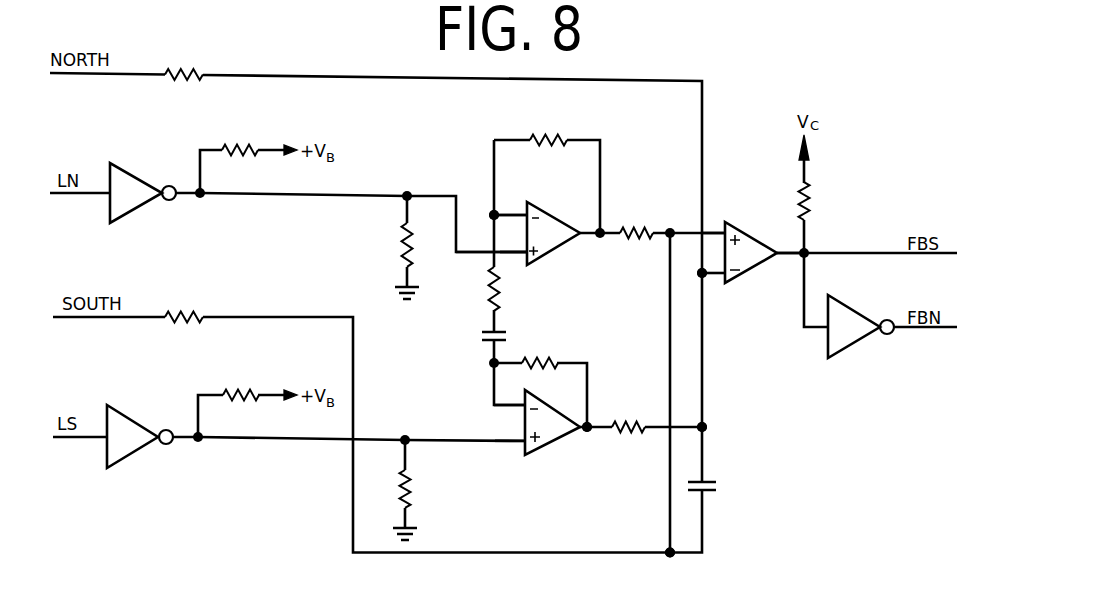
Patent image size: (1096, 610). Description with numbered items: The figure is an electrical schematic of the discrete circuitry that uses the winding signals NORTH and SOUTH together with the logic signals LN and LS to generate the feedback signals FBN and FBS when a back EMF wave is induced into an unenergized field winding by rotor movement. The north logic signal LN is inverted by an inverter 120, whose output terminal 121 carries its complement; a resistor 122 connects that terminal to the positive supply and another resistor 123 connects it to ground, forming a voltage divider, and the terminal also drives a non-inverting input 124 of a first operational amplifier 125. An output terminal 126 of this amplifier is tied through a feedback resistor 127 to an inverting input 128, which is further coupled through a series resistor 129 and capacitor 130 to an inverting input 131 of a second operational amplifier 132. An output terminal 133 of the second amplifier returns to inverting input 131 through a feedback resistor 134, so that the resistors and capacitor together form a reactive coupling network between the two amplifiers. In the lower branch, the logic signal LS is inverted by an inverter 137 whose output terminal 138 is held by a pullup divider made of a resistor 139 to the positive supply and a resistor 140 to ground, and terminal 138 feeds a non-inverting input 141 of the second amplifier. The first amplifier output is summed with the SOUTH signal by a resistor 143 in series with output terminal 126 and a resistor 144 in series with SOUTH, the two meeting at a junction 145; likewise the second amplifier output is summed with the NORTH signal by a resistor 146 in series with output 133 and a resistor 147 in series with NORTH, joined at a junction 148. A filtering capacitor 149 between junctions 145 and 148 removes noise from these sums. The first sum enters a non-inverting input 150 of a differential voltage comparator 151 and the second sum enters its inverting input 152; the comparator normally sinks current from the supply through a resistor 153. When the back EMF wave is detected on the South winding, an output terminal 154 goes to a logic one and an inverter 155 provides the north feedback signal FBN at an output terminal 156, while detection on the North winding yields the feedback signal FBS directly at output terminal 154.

The inverter 120 is at (125, 178).
The output terminal 121 is at (188, 203).
The resistor 122 is at (237, 149).
The resistor 123 is at (402, 243).
The non-inverting input 124 is at (516, 262).
The first operational amplifier 125 is at (562, 247).
The output terminal 126 is at (576, 225).
The feedback resistor 127 is at (548, 138).
The inverting input 128 is at (510, 212).
The resistor 129 is at (488, 292).
The capacitor 130 is at (482, 340).
The inverting input 131 is at (511, 406).
The second operational amplifier 132 is at (552, 442).
The output terminal 133 is at (585, 432).
The feedback resistor 134 is at (545, 362).
The inverter 137 is at (134, 460).
The output terminal 138 is at (189, 442).
The resistor 139 is at (239, 392).
The resistor 140 is at (412, 490).
The non-inverting input 141 is at (518, 443).
The resistor 143 is at (620, 228).
The resistor 144 is at (200, 314).
The junction 145 is at (672, 559).
The resistor 146 is at (610, 424).
The resistor 147 is at (188, 72).
The junction 148 is at (707, 427).
The filtering capacitor 149 is at (712, 480).
The non-inverting input 150 is at (712, 226).
The differential voltage comparator 151 is at (751, 251).
The inverting input 152 is at (712, 280).
The resistor 153 is at (811, 205).
The output terminal 154 is at (786, 258).
The inverter 155 is at (848, 347).
The output terminal 156 is at (927, 334).